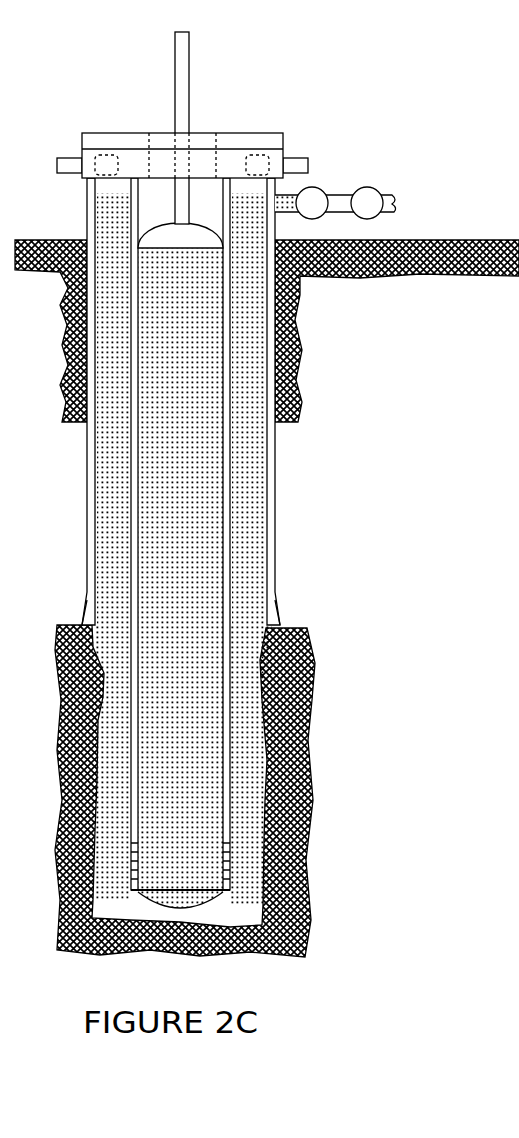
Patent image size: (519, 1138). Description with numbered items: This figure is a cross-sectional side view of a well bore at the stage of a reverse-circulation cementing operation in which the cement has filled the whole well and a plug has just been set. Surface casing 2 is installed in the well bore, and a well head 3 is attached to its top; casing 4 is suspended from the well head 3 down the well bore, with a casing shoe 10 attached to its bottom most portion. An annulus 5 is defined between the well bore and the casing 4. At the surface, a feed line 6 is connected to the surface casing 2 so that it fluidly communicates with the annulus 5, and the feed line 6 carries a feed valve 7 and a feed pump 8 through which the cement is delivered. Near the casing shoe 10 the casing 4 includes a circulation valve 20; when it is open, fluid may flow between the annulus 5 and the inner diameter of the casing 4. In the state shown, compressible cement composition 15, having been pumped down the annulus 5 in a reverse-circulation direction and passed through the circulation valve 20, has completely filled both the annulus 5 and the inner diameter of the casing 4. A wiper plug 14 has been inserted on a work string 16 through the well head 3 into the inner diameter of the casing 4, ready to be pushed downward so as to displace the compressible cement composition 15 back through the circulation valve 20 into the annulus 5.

The surface casing 2 is at (270, 542).
The well head 3 is at (277, 133).
The casing 4 is at (227, 668).
The annulus 5 is at (250, 392).
The feed line 6 is at (342, 202).
The feed valve 7 is at (312, 196).
The feed pump 8 is at (367, 194).
The casing shoe 10 is at (210, 897).
The wiper plug 14 is at (207, 240).
The compressible cement composition 15 is at (245, 353).
The work string 16 is at (183, 67).
The circulation valve 20 is at (222, 860).